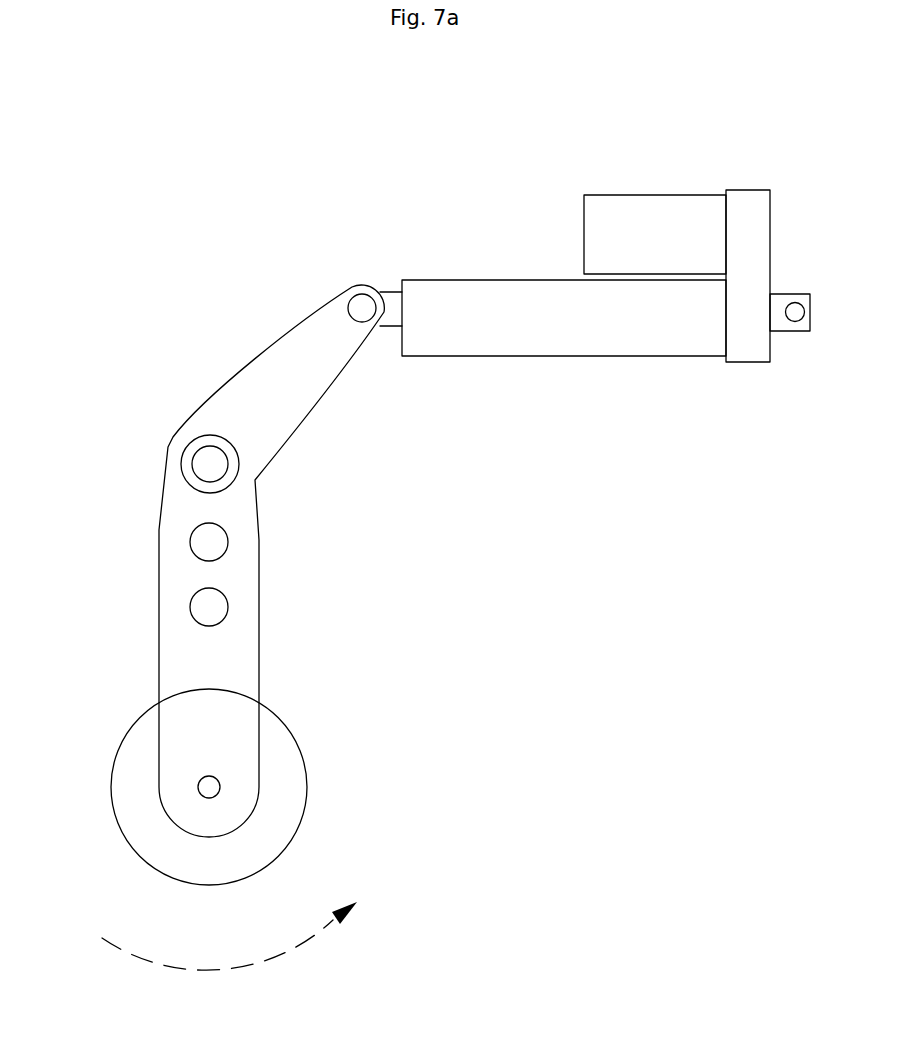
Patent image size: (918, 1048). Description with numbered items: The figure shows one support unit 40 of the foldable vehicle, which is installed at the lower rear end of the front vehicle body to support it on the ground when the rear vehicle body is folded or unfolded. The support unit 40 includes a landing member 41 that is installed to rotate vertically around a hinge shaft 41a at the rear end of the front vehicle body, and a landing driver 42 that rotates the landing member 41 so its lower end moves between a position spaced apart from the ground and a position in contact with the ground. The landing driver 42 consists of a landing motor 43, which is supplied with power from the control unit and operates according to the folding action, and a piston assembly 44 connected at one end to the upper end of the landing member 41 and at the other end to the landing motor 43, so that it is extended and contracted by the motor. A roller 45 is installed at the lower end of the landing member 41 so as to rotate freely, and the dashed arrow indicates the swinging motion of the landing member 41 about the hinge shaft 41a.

The support unit 40 is at (403, 230).
The landing member 41 is at (180, 657).
The hinge shaft 41a is at (200, 464).
The landing driver 42 is at (667, 145).
The landing motor 43 is at (545, 297).
The piston assembly 44 is at (653, 220).
The roller 45 is at (130, 800).